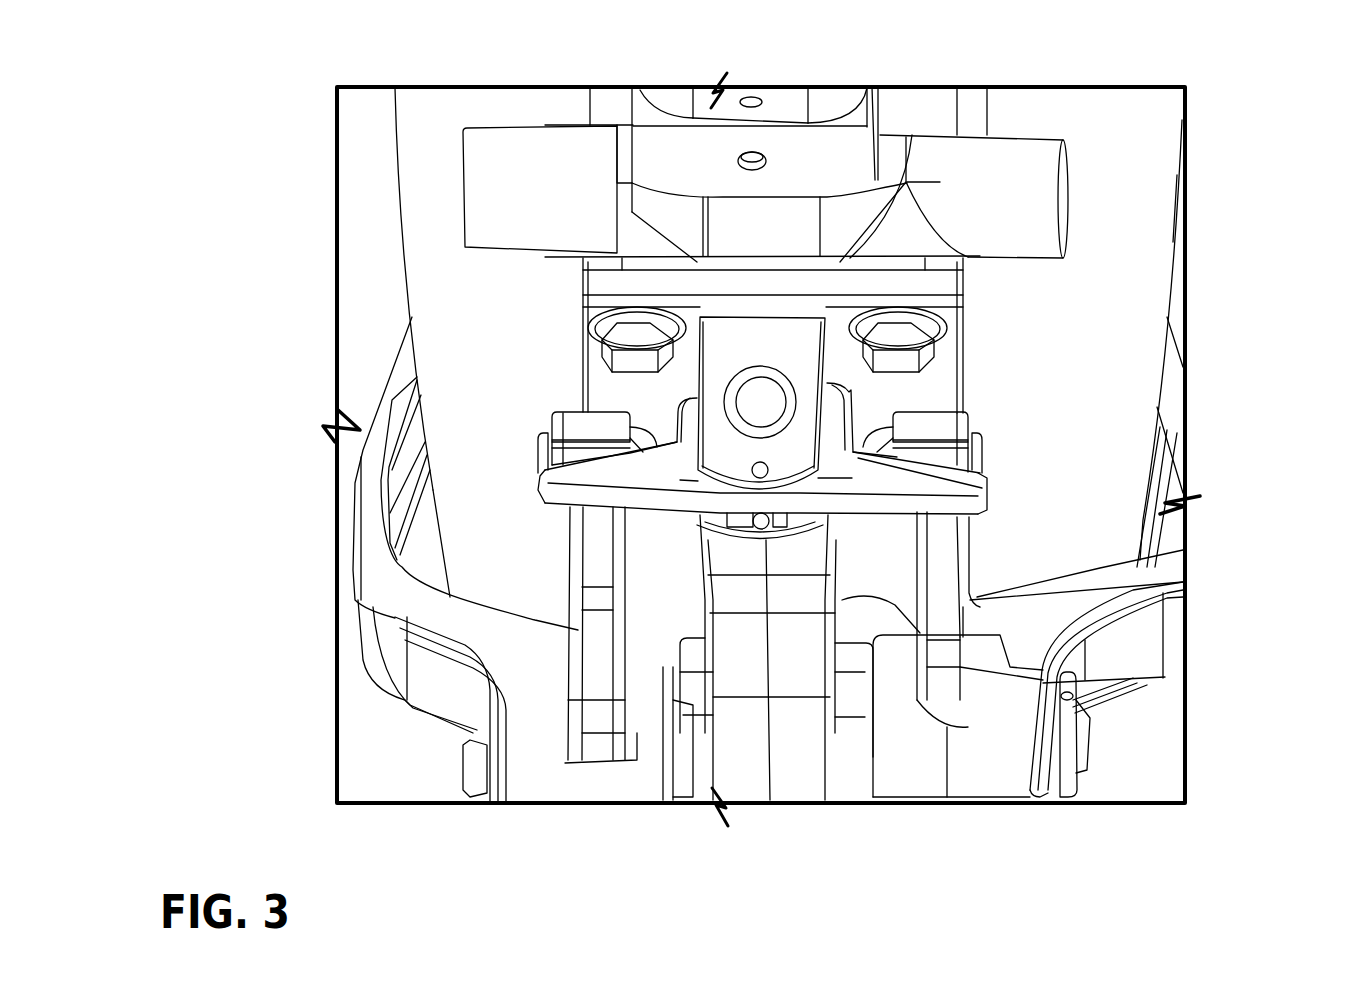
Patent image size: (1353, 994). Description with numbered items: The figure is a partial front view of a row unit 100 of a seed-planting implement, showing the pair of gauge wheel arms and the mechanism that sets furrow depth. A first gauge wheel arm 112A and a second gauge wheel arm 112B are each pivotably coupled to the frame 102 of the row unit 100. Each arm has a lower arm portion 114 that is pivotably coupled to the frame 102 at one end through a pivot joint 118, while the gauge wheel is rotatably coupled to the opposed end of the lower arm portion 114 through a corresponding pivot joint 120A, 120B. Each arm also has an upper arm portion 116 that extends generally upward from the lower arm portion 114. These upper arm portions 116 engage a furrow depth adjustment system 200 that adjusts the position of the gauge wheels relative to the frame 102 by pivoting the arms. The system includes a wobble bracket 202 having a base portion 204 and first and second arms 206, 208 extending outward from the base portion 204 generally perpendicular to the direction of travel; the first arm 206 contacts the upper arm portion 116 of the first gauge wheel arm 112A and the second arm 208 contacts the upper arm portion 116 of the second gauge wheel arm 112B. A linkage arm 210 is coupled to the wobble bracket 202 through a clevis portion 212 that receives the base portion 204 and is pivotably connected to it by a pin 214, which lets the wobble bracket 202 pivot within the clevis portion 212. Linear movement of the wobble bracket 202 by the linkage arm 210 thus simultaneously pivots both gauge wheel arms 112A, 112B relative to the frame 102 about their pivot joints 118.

The row unit 100 is at (207, 127).
The frame 102 is at (933, 378).
The first gauge wheel arm 112A is at (1143, 702).
The second gauge wheel arm 112B is at (355, 643).
The lower arm portion 114 is at (363, 452).
The upper arm portion 116 is at (597, 560).
The pivot joint 118 is at (473, 763).
The pivot joint 120A is at (1165, 120).
The pivot joint 120B is at (395, 187).
The furrow depth adjustment system 200 is at (847, 309).
The wobble bracket 202 is at (948, 468).
The base portion 204 is at (683, 413).
The first arm 206 is at (990, 508).
The second arm 208 is at (543, 470).
The linkage arm 210 is at (797, 325).
The clevis portion 212 is at (765, 340).
The pin 214 is at (757, 397).